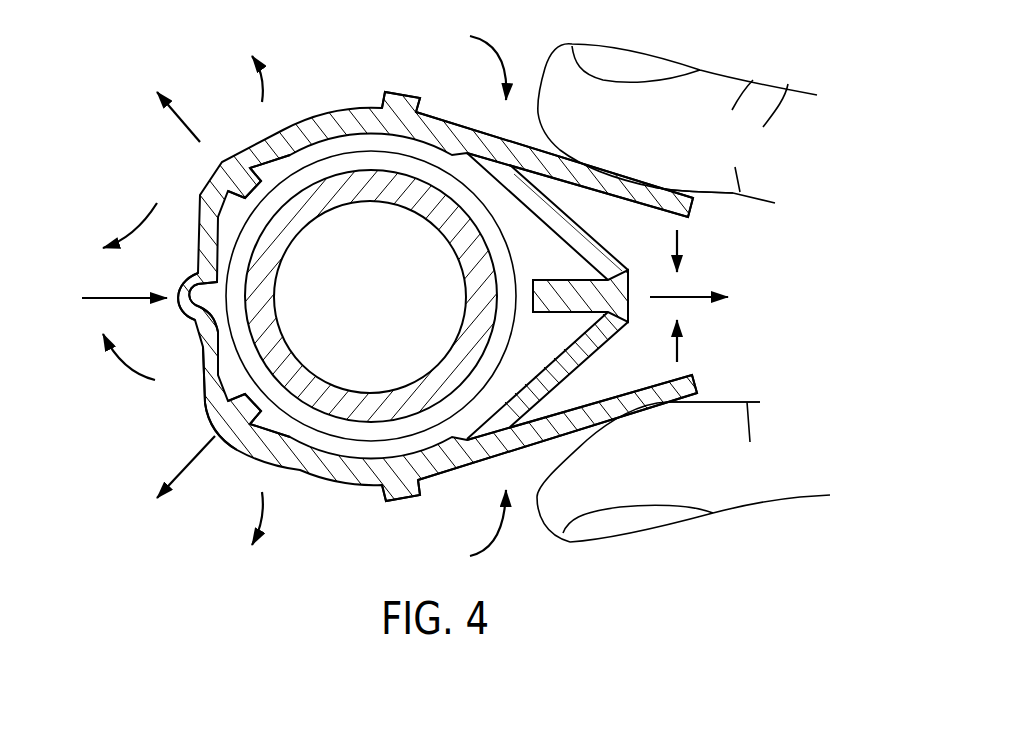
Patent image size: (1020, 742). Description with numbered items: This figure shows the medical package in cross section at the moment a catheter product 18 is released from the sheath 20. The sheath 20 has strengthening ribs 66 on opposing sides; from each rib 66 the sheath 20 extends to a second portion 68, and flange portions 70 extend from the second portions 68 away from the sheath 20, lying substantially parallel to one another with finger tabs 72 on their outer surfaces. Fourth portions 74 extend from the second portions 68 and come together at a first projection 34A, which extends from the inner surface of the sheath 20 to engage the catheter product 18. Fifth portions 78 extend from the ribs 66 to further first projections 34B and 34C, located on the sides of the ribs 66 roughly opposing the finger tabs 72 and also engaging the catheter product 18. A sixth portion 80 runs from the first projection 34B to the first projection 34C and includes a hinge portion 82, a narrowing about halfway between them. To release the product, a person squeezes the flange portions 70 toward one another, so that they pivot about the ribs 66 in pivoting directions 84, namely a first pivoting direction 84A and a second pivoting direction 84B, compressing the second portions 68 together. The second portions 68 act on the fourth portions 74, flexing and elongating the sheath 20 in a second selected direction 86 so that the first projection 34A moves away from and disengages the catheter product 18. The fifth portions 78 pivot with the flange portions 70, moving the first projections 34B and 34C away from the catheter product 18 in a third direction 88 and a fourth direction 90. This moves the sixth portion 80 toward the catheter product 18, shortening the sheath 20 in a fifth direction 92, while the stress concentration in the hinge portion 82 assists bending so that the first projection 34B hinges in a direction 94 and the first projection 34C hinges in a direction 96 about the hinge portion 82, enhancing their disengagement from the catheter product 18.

The catheter product 18 is at (384, 313).
The sheath 20 is at (306, 118).
The first projection 34A is at (557, 292).
The first projection 34B is at (238, 185).
The first projection 34C is at (246, 422).
The rib 66 is at (393, 92).
The second portion 68 is at (495, 148).
The flange portion 70 is at (706, 218).
The finger tab 72 is at (700, 193).
The fourth portion 74 is at (588, 242).
The fifth portion 78 is at (242, 148).
The sixth portion 80 is at (208, 357).
The hinge portion 82 is at (186, 292).
The pivoting directions 84 is at (241, 298).
The first pivoting direction 84A is at (501, 63).
The second pivoting direction 84B is at (501, 527).
The second selected direction 86 is at (706, 296).
The third direction 88 is at (177, 98).
The fourth direction 90 is at (169, 471).
The fifth direction 92 is at (123, 283).
The direction 94 is at (120, 219).
The direction 96 is at (119, 361).